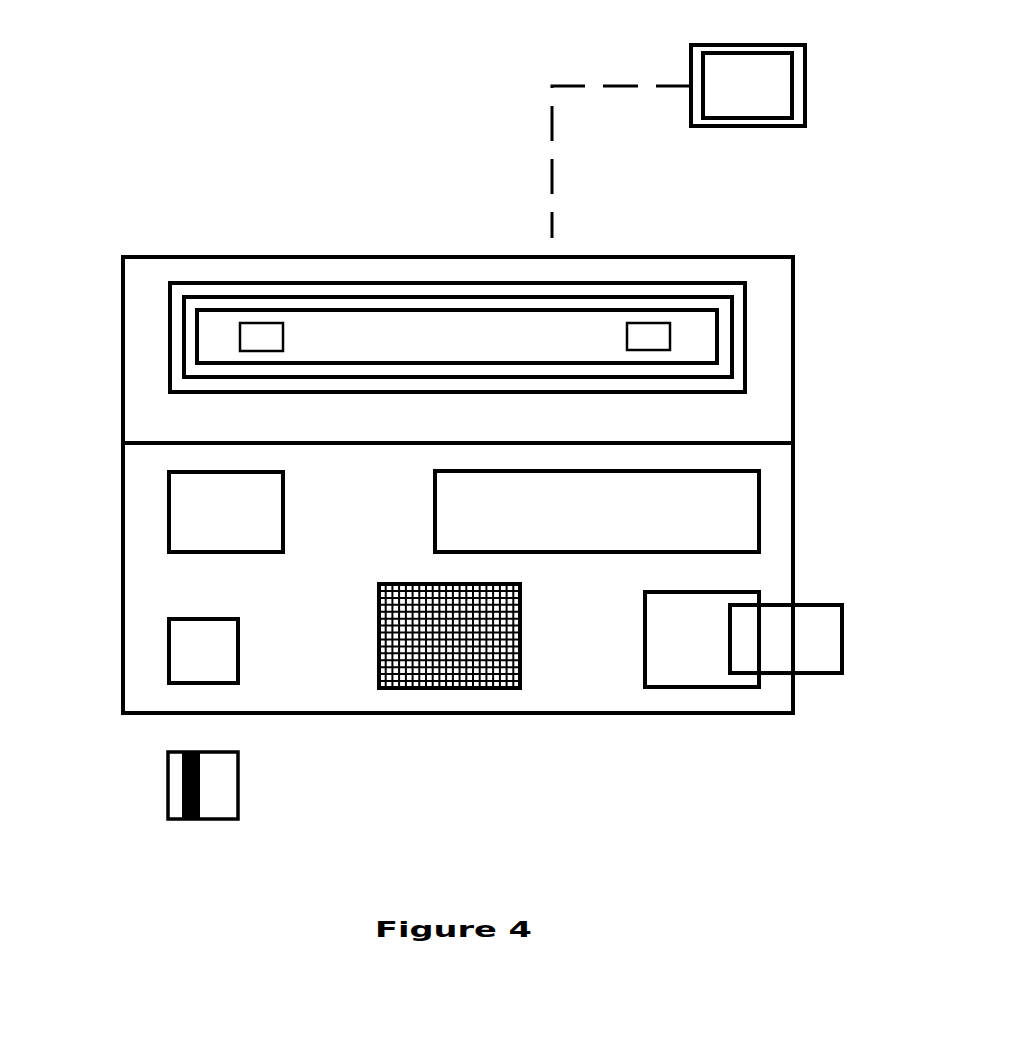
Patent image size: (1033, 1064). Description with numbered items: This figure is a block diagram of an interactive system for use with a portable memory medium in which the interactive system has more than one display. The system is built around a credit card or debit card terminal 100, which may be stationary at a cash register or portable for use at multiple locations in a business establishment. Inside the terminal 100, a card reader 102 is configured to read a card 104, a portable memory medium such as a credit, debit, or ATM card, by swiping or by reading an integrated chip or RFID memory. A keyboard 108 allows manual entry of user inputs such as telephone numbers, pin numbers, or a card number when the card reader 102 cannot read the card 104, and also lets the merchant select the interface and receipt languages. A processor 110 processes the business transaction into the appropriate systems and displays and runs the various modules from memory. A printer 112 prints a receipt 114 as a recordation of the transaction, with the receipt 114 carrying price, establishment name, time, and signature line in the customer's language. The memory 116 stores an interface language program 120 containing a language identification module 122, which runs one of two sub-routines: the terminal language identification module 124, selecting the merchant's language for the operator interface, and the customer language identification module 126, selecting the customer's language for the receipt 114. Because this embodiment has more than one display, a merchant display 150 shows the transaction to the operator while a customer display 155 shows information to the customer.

The terminal 100 is at (208, 259).
The card reader 102 is at (202, 654).
The card 104 is at (212, 768).
The keyboard 108 is at (459, 688).
The processor 110 is at (202, 513).
The printer 112 is at (685, 642).
The receipt 114 is at (813, 638).
The memory 116 is at (192, 310).
The interface language program 120 is at (253, 384).
The language identification module 122 is at (279, 317).
The terminal language identification module 124 is at (252, 337).
The customer language identification module 126 is at (642, 333).
The merchant display 150 is at (748, 78).
The customer display 155 is at (687, 511).